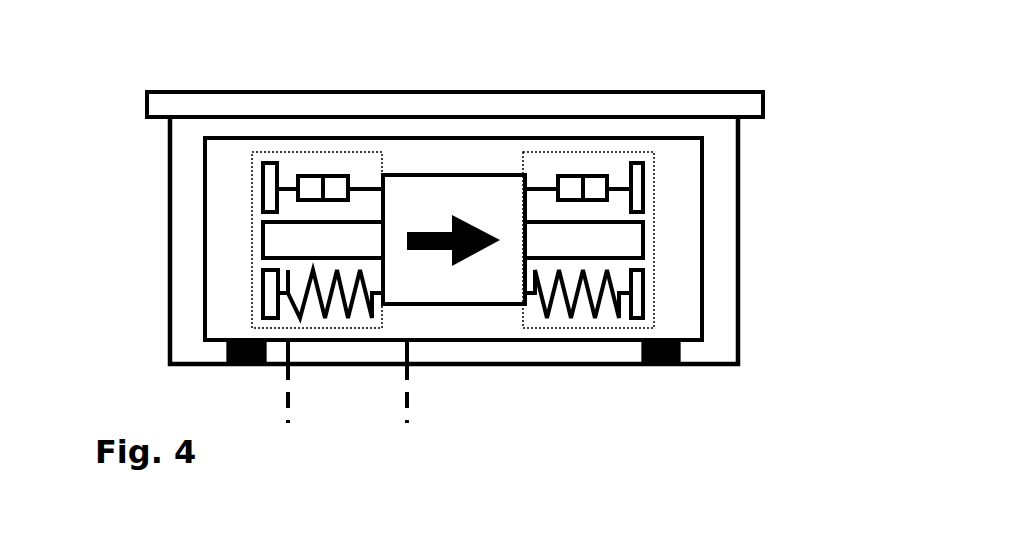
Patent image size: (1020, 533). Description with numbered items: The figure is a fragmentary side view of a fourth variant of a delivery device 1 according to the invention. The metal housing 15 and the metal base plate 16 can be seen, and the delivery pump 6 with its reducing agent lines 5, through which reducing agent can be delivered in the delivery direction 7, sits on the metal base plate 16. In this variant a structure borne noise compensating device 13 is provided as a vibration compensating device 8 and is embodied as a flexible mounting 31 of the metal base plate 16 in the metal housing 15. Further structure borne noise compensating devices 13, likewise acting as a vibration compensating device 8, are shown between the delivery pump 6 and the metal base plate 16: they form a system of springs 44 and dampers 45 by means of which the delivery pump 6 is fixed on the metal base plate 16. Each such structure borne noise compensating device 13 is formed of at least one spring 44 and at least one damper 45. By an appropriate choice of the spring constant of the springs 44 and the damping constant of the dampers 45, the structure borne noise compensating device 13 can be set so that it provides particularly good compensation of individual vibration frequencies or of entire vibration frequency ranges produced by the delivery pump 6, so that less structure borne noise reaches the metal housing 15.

The delivery device 1 is at (145, 92).
The reducing agent lines 5 is at (342, 248).
The delivery pump 6 is at (428, 306).
The delivery direction 7 is at (430, 247).
The vibration compensating device 8 is at (252, 152).
The structure borne noise compensating device 13 is at (265, 152).
The metal housing 15 is at (740, 220).
The metal base plate 16 is at (394, 239).
The flexible mounting 31 is at (677, 367).
The spring 44 is at (300, 293).
The damper 45 is at (303, 176).